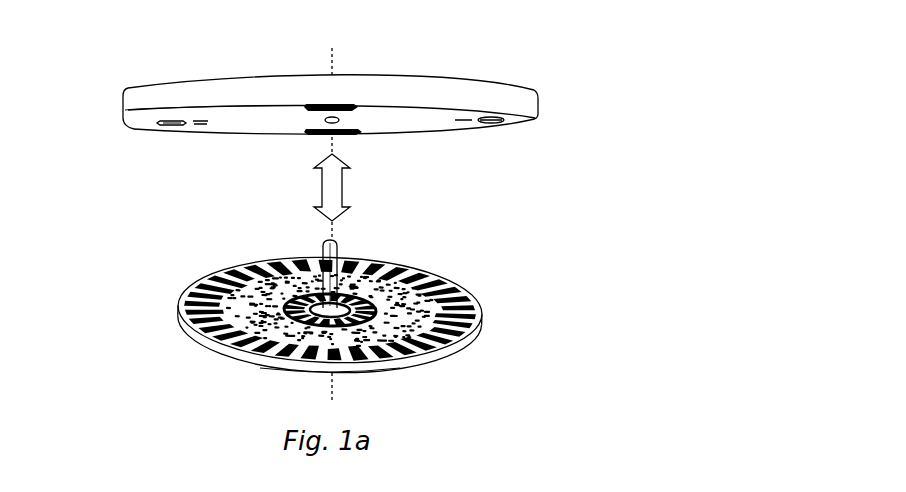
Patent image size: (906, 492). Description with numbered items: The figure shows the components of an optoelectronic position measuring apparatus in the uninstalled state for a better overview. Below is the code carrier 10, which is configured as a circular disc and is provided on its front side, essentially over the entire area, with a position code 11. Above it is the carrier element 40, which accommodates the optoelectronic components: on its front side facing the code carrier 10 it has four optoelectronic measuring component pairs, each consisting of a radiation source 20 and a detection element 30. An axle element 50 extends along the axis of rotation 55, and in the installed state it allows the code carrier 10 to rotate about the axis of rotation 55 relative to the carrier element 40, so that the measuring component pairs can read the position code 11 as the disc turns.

The code carrier 10 is at (375, 311).
The position code 11 is at (453, 282).
The radiation source 20 is at (196, 126).
The detection element 30 is at (168, 124).
The carrier element 40 is at (403, 92).
The axle element 50 is at (338, 248).
The axis of rotation 55 is at (332, 374).